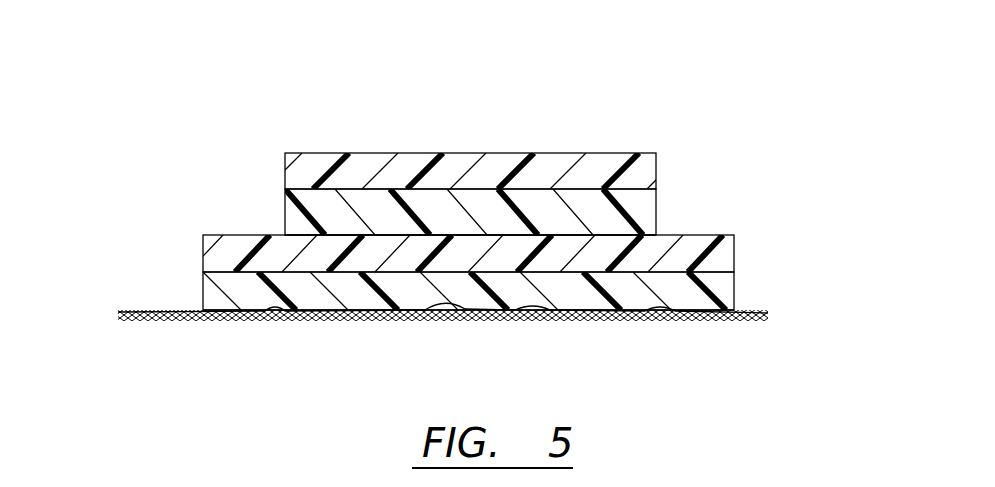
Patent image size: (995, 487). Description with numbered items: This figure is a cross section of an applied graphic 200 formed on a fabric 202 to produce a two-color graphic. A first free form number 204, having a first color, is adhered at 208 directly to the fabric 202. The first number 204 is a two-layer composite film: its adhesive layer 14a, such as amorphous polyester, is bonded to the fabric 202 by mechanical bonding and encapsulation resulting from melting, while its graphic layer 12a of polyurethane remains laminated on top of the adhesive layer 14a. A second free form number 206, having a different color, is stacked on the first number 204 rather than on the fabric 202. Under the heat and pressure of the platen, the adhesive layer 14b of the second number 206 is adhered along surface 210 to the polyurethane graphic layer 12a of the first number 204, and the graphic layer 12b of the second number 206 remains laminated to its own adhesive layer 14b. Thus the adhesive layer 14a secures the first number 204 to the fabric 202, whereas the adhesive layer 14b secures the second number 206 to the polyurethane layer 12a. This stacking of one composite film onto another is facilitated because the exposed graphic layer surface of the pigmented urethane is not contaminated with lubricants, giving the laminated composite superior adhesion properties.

The applied graphic 200 is at (496, 210).
The fabric 202 is at (145, 310).
The first free form number 204 is at (496, 257).
The second free form number 206 is at (535, 178).
The adhesion to the fabric 208 is at (427, 312).
The surface 210 is at (613, 236).
The graphic layer 12a is at (215, 251).
The adhesive layer 14a is at (214, 293).
The graphic layer 12b is at (296, 172).
The adhesive layer 14b is at (298, 218).